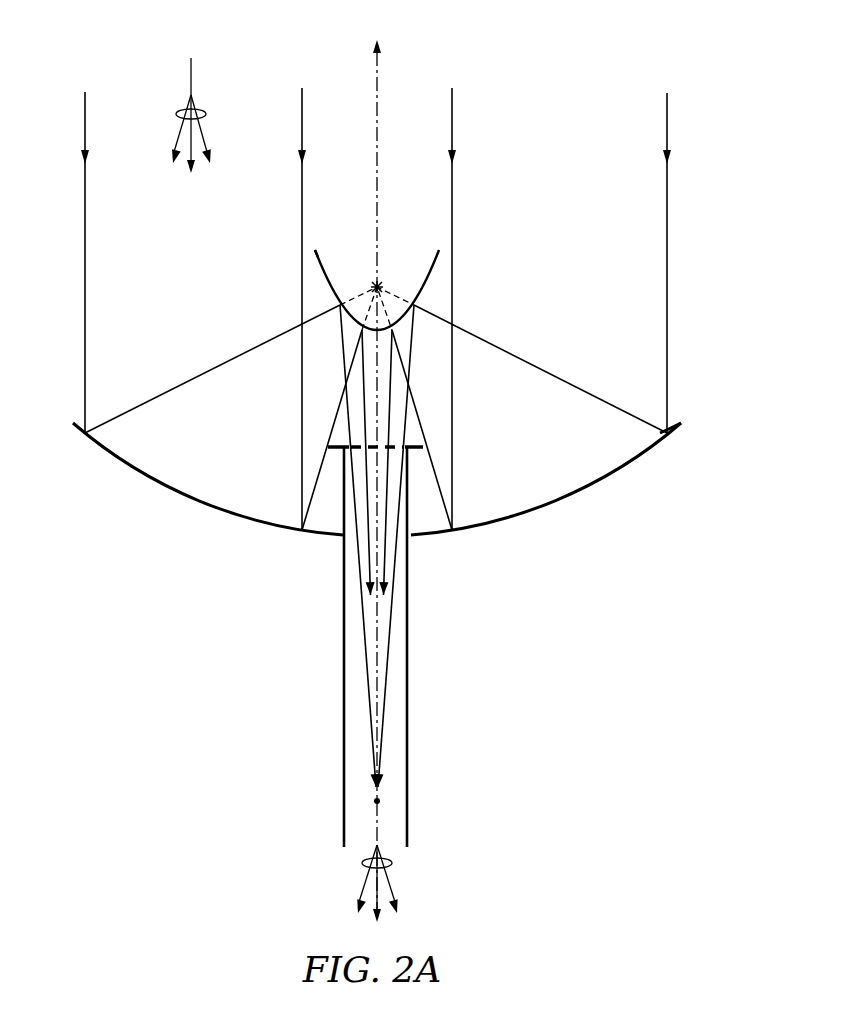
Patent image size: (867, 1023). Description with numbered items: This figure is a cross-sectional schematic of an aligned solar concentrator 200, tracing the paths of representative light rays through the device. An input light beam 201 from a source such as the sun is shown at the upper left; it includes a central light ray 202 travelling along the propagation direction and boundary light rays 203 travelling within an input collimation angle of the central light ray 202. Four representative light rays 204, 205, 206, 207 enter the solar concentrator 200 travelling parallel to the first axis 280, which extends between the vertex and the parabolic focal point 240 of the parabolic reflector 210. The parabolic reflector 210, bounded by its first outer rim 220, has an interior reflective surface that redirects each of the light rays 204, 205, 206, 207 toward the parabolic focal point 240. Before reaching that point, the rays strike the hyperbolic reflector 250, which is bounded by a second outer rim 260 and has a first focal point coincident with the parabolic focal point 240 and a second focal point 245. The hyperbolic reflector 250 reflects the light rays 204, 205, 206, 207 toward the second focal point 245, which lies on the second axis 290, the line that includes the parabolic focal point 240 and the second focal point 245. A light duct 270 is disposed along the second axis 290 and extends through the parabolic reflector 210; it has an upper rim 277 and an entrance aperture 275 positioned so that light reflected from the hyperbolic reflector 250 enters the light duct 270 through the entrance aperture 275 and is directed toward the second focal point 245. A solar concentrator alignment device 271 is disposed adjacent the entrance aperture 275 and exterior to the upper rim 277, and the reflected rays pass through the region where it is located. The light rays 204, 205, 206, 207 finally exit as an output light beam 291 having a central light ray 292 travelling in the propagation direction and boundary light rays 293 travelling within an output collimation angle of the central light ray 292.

The solar concentrator 200 is at (580, 55).
The input light beam 201 is at (199, 101).
The central light ray 202 is at (200, 121).
The boundary light rays 203 is at (205, 137).
The light ray 204 is at (86, 232).
The light ray 205 is at (301, 187).
The light ray 206 is at (453, 185).
The light ray 207 is at (666, 248).
The parabolic reflector 210 is at (644, 455).
The first outer rim 220 is at (683, 424).
The parabolic focal point 240 is at (381, 283).
The second focal point 245 is at (373, 801).
The hyperbolic reflector 250 is at (323, 277).
The second outer rim 260 is at (315, 250).
The light duct 270 is at (342, 628).
The solar concentrator alignment device 271 is at (331, 447).
The entrance aperture 275 is at (358, 442).
The upper rim 277 is at (407, 443).
The first axis 280 is at (376, 117).
The second axis 290 is at (378, 78).
The output light beam 291 is at (385, 858).
The central light ray 292 is at (387, 878).
The boundary light rays 293 is at (393, 885).